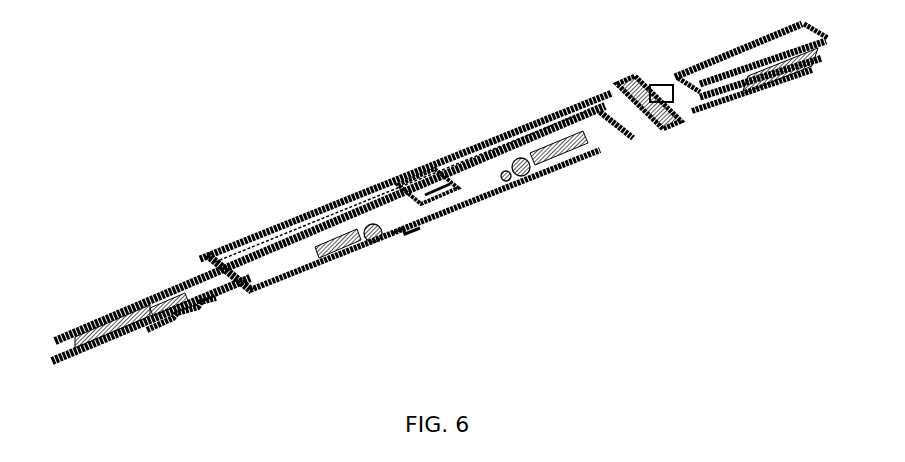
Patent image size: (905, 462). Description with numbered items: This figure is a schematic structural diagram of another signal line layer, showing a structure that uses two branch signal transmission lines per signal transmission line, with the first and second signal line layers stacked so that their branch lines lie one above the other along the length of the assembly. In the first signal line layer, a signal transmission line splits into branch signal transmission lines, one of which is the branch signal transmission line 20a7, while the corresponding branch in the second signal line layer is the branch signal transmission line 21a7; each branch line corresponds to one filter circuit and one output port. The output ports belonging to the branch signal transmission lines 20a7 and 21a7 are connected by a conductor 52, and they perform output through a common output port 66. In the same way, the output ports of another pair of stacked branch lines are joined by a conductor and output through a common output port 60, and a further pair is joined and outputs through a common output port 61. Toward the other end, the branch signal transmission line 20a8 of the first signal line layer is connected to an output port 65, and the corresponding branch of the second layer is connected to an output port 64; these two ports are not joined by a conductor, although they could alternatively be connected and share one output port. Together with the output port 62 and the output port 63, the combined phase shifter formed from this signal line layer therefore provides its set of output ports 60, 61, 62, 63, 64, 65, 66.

The branch signal transmission line 20a7 is at (130, 300).
The branch signal transmission line 21a7 is at (78, 368).
The common output port 66 is at (212, 311).
The conductor 52 is at (378, 240).
The common output port 60 is at (414, 232).
The output port 62 is at (445, 205).
The output port 63 is at (448, 196).
The common output port 61 is at (490, 193).
The branch signal transmission line 20a8 is at (654, 82).
The output port 65 is at (708, 93).
The output port 64 is at (706, 110).